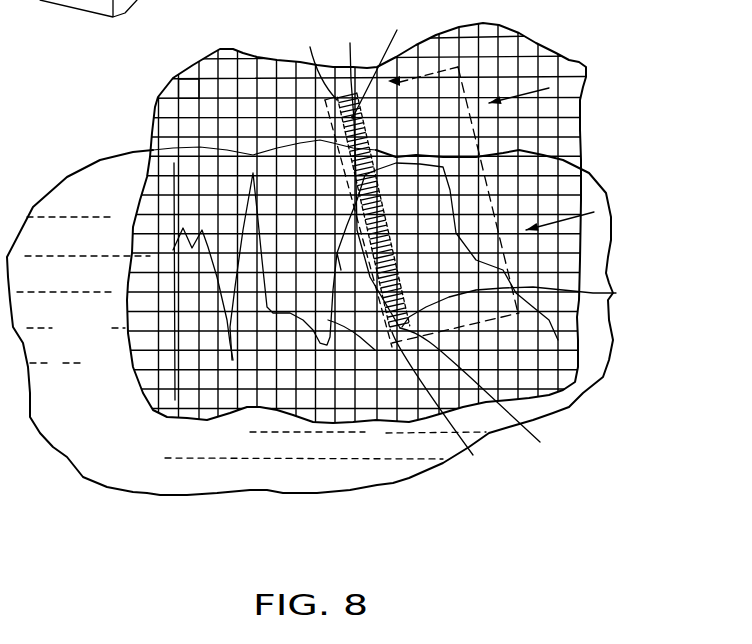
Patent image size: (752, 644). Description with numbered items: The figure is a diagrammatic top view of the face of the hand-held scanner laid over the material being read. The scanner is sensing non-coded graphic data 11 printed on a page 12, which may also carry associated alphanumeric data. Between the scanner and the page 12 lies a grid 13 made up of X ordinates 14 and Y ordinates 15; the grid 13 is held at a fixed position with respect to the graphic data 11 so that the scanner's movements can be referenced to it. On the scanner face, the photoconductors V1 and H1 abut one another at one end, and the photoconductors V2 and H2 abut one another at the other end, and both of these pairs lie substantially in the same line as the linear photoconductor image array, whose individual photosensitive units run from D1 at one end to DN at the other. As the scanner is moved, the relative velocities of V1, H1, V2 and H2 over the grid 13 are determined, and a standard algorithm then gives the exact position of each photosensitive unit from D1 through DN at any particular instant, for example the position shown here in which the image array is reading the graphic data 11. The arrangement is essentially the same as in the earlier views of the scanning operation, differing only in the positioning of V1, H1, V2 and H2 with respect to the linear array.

The non-coded graphic data 11 is at (350, 410).
The page 12 is at (180, 470).
The grid 13 is at (155, 107).
The X ordinates 14 is at (255, 58).
The Y ordinates 15 is at (190, 98).
The photoconductor V1 is at (318, 59).
The photoconductor H1 is at (371, 173).
The photosensitive unit D1 is at (377, 64).
The photoconductor V2 is at (443, 406).
The photoconductor H2 is at (477, 404).
The photosensitive unit DN is at (616, 293).